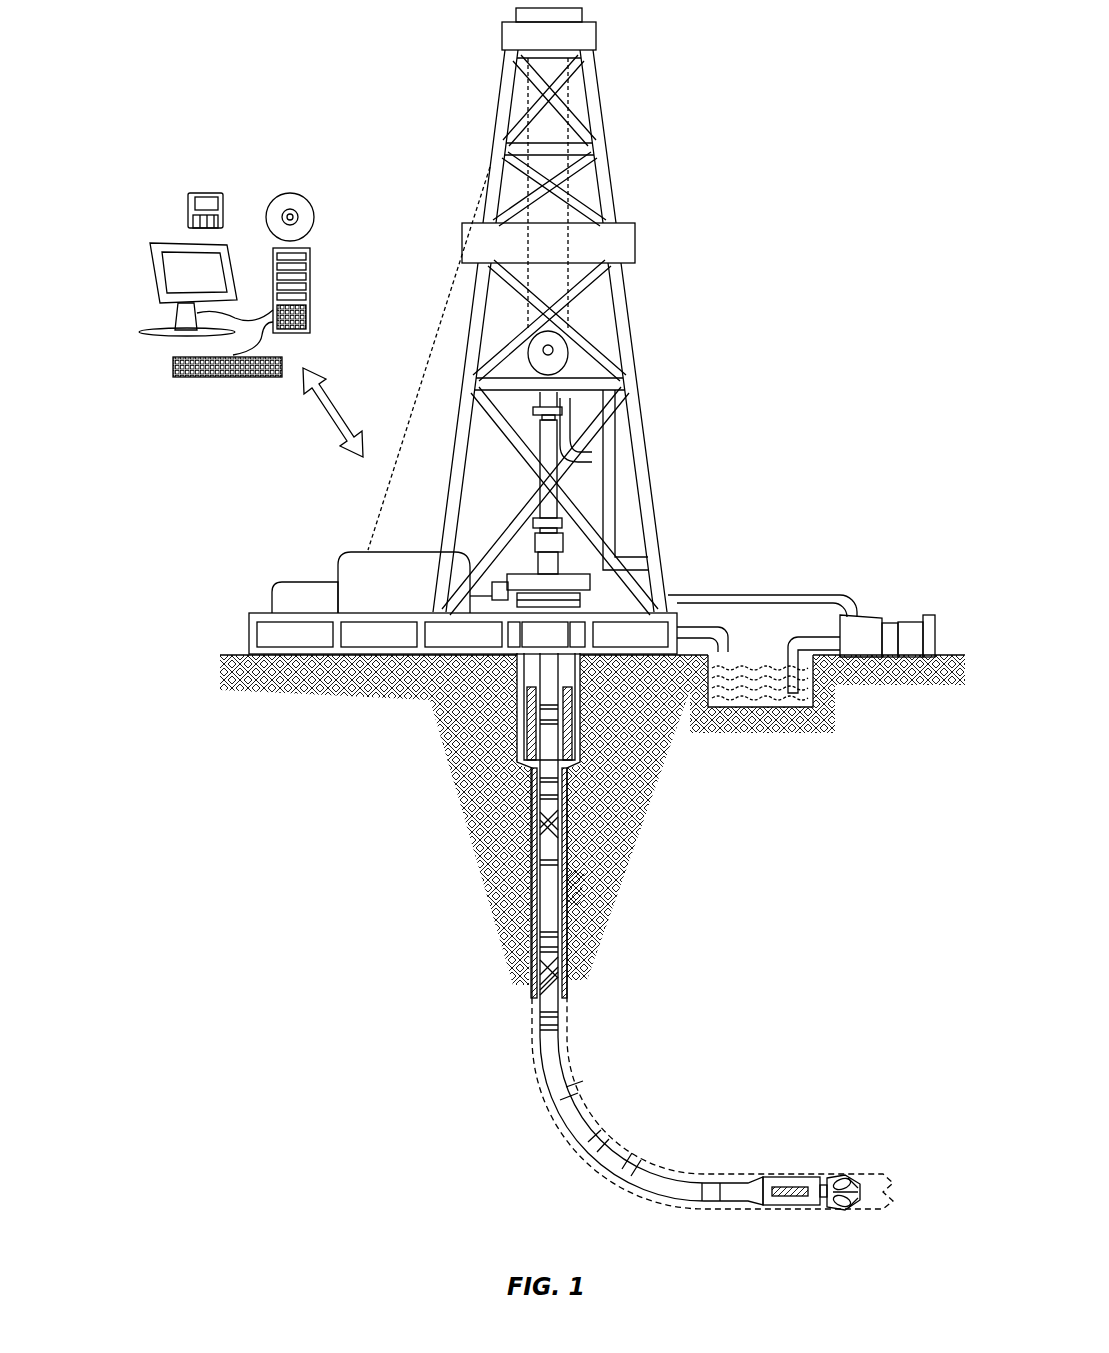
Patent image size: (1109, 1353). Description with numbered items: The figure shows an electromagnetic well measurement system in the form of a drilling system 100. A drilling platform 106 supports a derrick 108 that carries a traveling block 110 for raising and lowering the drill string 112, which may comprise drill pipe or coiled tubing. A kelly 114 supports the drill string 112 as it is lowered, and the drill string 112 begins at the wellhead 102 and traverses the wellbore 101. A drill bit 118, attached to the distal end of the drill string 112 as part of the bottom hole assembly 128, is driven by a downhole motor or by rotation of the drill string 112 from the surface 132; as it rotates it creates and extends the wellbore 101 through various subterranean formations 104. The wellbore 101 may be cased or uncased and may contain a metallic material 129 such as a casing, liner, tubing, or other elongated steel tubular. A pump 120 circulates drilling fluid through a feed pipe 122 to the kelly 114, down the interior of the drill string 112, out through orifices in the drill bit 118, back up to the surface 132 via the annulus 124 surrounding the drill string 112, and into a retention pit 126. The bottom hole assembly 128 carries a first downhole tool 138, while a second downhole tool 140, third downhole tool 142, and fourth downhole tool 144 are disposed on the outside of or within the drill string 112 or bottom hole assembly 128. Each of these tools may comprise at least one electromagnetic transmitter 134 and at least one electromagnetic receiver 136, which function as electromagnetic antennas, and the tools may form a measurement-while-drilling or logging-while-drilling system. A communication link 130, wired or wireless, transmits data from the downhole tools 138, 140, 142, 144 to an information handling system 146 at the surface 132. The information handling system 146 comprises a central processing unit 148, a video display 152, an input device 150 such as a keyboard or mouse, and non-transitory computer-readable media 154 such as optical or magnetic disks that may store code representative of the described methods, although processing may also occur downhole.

The drilling system 100 is at (870, 111).
The wellbore 101 is at (584, 1019).
The wellhead 102 is at (604, 601).
The subterranean formations 104 is at (792, 953).
The drilling platform 106 is at (249, 630).
The derrick 108 is at (608, 160).
The traveling block 110 is at (572, 353).
The drill string 112 is at (558, 833).
The kelly 114 is at (548, 437).
The drill bit 118 is at (853, 1177).
The pump 120 is at (868, 615).
The feed pipe 122 is at (787, 595).
The annulus 124 is at (537, 860).
The retention pit 126 is at (755, 693).
The bottom hole assembly 128 is at (753, 1177).
The metallic material 129 is at (577, 890).
The communication link 130 is at (325, 420).
The surface 132 is at (947, 657).
The electromagnetic transmitter 134 is at (548, 815).
The electromagnetic receiver 136 is at (573, 850).
The first downhole tool 138 is at (790, 1197).
The second downhole tool 140 is at (587, 1137).
The third downhole tool 142 is at (550, 983).
The fourth downhole tool 144 is at (550, 827).
The information handling system 146 is at (224, 289).
The central processing unit 148 is at (312, 260).
The input device 150 is at (185, 378).
The video display 152 is at (157, 280).
The non-transitory computer-readable media 154 is at (288, 193).